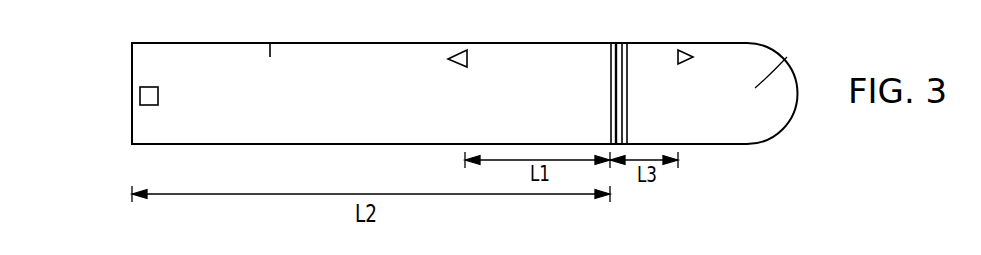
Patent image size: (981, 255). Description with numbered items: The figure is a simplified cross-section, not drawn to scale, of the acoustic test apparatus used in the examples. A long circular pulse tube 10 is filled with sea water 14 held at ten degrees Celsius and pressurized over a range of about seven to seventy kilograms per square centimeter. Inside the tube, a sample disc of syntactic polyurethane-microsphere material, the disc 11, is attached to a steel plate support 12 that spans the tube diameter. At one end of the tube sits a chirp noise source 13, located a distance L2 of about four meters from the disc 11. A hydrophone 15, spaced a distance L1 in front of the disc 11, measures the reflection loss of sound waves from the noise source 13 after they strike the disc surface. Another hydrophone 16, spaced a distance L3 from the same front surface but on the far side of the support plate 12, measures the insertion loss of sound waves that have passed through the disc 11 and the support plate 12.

The pulse tube 10 is at (355, 43).
The syntactic polyurethane-microsphere disc 11 is at (611, 58).
The steel plate support 12 is at (627, 58).
The chirp noise source 13 is at (158, 95).
The sea water 14 is at (270, 43).
The hydrophone 15 is at (450, 52).
The hydrophone 16 is at (678, 60).